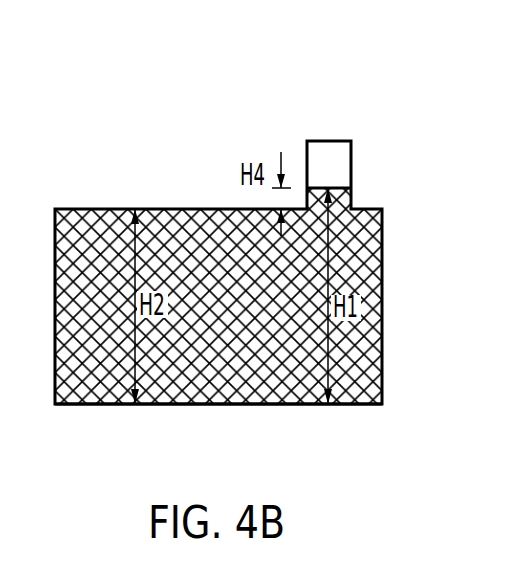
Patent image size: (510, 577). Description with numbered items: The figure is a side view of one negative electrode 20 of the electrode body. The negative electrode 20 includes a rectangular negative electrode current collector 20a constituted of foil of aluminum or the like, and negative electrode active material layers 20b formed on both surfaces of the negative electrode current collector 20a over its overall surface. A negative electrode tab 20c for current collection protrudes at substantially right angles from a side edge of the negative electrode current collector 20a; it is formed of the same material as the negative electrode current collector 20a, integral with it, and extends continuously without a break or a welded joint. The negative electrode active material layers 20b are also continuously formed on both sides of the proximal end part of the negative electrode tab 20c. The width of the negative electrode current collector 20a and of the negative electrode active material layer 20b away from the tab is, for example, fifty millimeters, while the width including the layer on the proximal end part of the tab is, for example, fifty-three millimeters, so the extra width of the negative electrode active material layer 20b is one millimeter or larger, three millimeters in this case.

The negative electrode 20 is at (170, 198).
The negative electrode current collector 20a is at (181, 406).
The negative electrode active material layer 20b is at (267, 378).
The negative electrode tab 20c is at (330, 150).